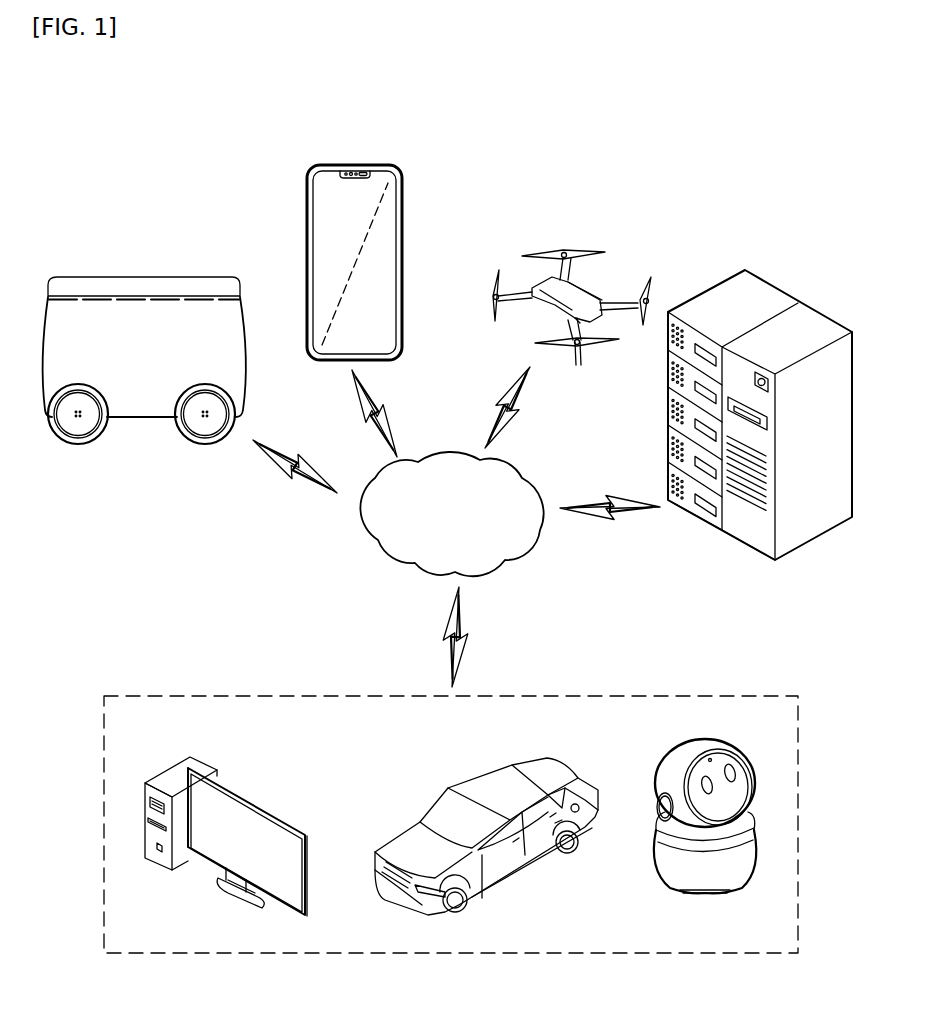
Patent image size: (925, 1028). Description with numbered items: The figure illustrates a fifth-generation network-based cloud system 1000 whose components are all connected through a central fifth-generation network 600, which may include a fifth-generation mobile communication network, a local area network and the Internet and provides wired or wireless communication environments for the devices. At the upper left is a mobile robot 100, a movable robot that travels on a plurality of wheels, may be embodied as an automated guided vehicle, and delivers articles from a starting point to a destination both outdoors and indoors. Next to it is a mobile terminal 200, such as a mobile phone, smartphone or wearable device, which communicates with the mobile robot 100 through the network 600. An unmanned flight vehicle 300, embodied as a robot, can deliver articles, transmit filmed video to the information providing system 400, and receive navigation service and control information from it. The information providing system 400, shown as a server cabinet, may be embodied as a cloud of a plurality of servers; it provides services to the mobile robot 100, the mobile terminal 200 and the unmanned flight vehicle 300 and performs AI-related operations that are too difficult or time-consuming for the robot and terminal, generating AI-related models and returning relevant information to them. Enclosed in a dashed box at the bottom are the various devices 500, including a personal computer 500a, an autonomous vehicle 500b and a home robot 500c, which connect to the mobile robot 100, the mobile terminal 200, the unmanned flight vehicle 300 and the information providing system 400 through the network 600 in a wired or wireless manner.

The mobile robot 100 is at (200, 276).
The mobile terminal 200 is at (388, 165).
The unmanned flight vehicle 300 is at (585, 249).
The information providing system 400 is at (808, 316).
The various devices 500 is at (722, 695).
The personal computer 500a is at (203, 760).
The autonomous vehicle 500b is at (558, 763).
The home robot 500c is at (735, 760).
The 5G network 600 is at (520, 478).
The cloud system 1000 is at (116, 1010).